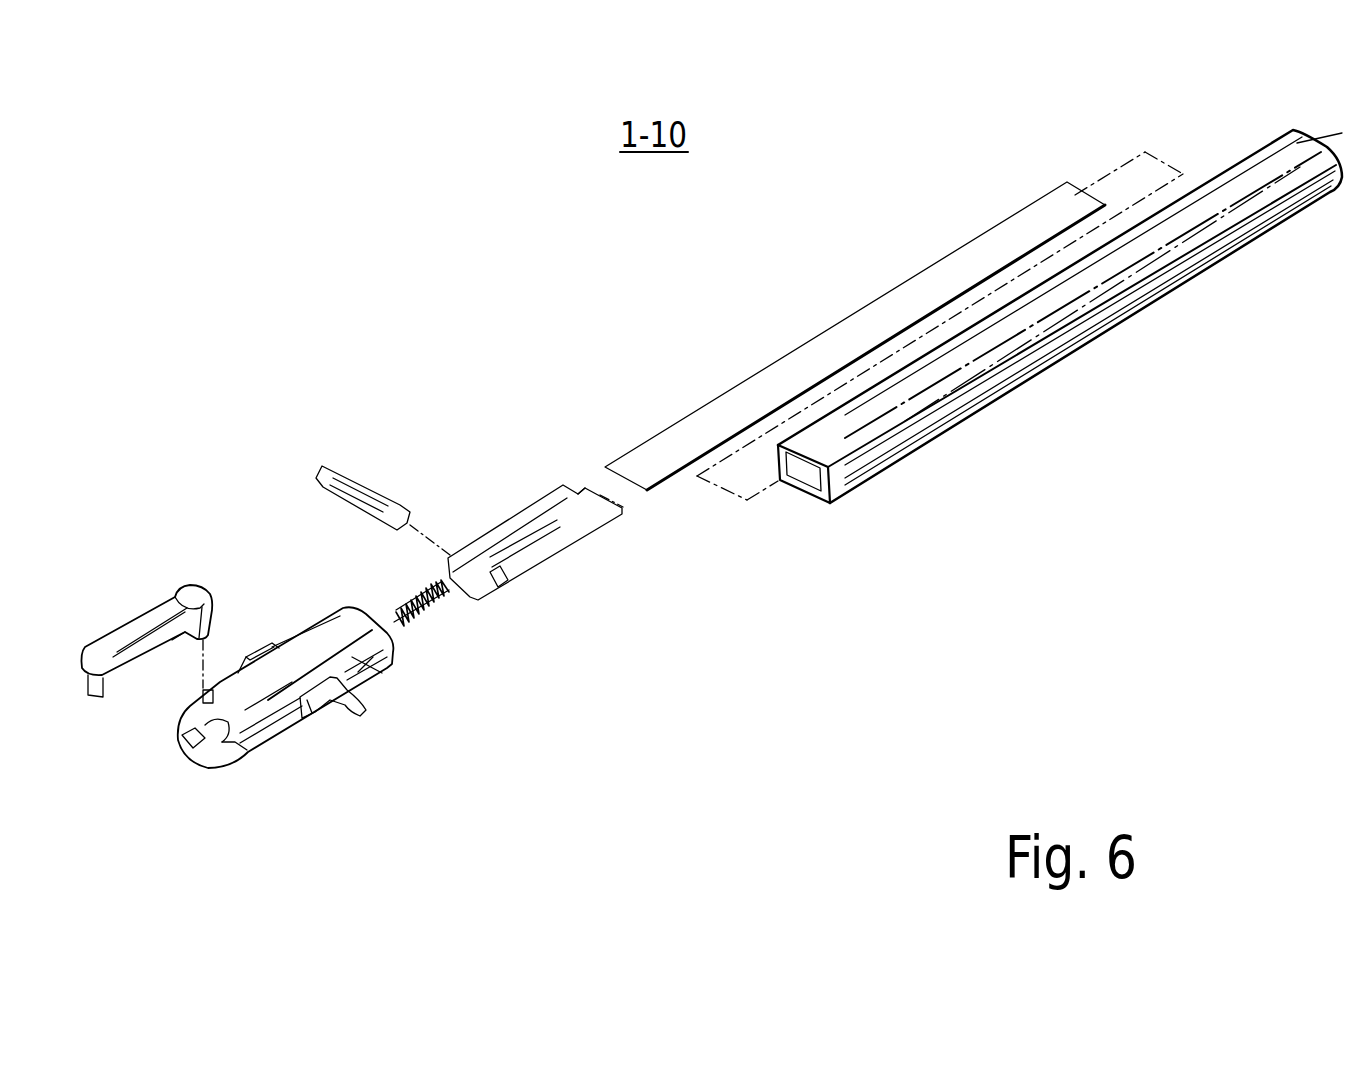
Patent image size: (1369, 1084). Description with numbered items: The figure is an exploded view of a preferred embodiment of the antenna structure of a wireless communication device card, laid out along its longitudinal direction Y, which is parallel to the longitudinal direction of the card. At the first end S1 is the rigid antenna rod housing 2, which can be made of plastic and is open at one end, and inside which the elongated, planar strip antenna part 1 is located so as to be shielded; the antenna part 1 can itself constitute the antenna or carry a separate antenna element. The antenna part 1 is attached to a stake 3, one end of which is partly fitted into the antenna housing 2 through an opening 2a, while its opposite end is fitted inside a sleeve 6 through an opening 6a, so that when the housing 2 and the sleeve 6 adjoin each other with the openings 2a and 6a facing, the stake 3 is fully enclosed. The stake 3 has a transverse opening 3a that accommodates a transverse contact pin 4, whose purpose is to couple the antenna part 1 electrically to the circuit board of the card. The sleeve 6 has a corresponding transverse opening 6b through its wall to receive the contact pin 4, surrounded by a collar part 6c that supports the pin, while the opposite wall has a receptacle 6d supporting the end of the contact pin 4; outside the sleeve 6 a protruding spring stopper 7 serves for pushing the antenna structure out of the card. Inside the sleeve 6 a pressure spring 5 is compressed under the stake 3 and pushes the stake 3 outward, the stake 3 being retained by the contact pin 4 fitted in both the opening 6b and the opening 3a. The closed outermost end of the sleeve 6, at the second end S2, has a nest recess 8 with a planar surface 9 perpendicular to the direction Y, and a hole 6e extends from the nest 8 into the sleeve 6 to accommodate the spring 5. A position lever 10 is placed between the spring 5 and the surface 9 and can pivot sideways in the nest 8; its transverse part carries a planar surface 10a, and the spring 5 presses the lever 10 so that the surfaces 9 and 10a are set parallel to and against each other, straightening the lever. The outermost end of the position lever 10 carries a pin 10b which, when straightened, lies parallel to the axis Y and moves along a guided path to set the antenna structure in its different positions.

The antenna part 1 is at (828, 342).
The antenna rod housing 2 is at (1100, 296).
The opening 2a is at (808, 482).
The stake 3 is at (528, 517).
The transverse opening 3a is at (498, 584).
The contact pin 4 is at (360, 483).
The pressure spring 5 is at (420, 624).
The sleeve 6 is at (380, 677).
The opening 6a is at (375, 612).
The opening 6b is at (252, 643).
The collar part 6c is at (268, 644).
The receptacle 6d is at (317, 712).
The hole 6e is at (247, 752).
The spring stopper 7 is at (350, 697).
The nest recess 8 is at (195, 737).
The planar surface 9 is at (219, 706).
The position lever 10 is at (155, 613).
The planar surface 10a is at (172, 640).
The pin 10b is at (85, 698).
The longitudinal direction Y is at (1020, 333).
The first end S1 is at (1187, 323).
The second end S2 is at (410, 690).